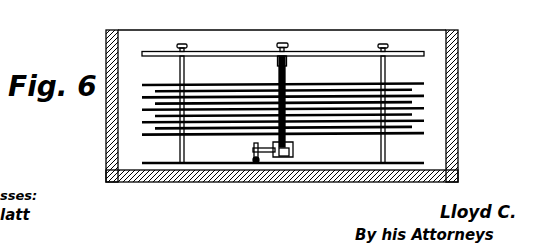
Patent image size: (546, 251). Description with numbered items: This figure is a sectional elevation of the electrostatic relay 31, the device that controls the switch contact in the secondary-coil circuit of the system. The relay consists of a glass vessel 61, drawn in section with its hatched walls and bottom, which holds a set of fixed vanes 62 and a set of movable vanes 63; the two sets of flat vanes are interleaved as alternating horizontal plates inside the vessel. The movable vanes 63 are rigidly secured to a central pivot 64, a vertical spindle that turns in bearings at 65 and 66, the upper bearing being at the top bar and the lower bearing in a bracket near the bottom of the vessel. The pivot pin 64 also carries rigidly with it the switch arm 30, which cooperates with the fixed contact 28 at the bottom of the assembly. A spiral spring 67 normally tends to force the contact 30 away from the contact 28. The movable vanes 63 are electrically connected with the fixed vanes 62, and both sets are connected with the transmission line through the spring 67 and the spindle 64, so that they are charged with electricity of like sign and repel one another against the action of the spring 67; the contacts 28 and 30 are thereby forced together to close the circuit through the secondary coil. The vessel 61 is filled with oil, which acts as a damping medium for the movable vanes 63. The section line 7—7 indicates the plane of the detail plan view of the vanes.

The section line 7- 7 is at (163, 73).
The fixed contact 28 is at (253, 151).
The movable switch contact 30 is at (259, 156).
The electrostatic relay 31 is at (283, 31).
The glass vessel 61 is at (458, 92).
The fixed vanes 62 is at (421, 84).
The movable vanes 63 is at (237, 91).
The central pivot 64 is at (286, 77).
The bearing 65 is at (284, 64).
The bearing 66 is at (279, 158).
The spiral spring 67 is at (286, 160).